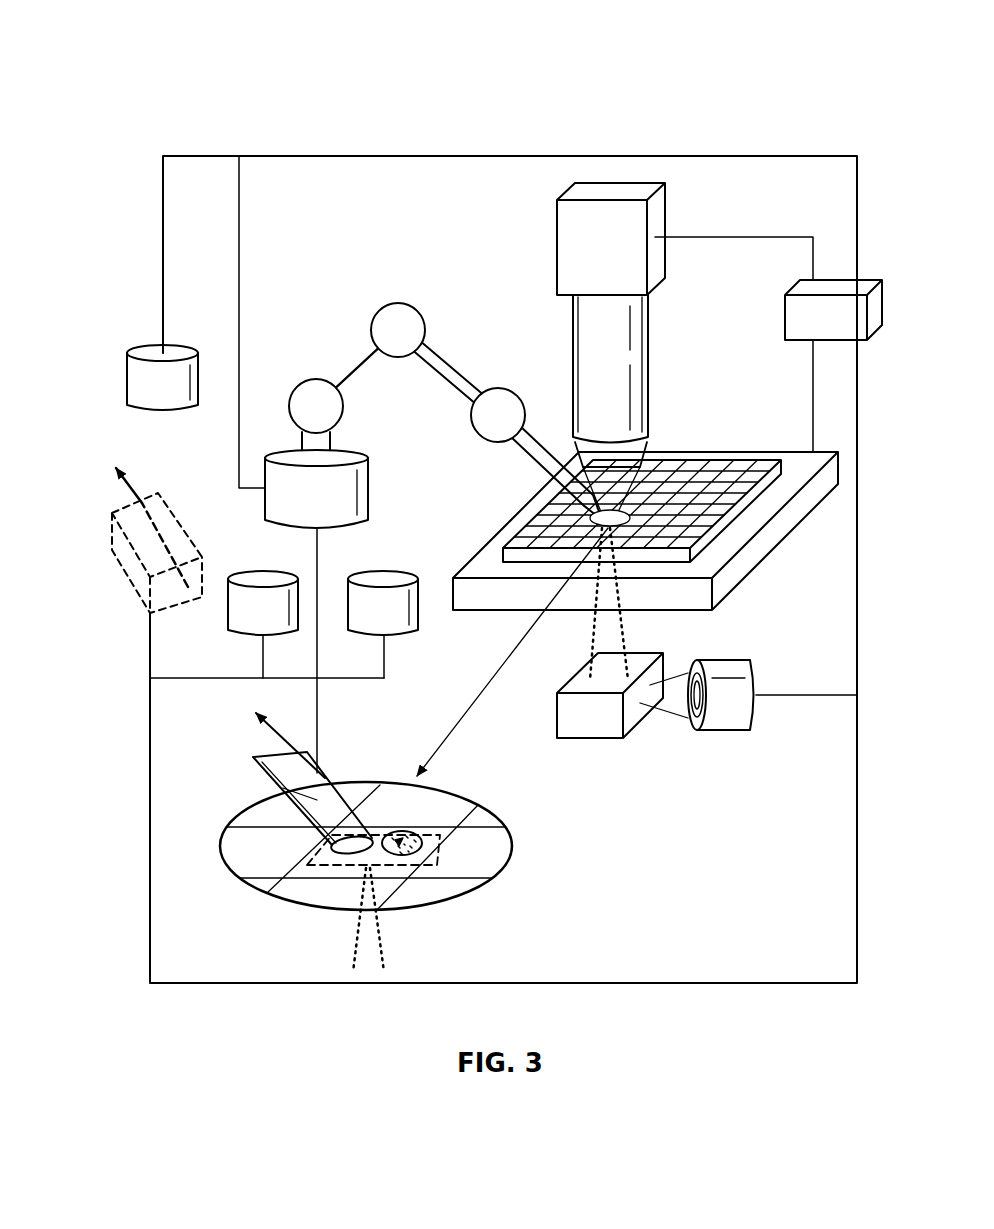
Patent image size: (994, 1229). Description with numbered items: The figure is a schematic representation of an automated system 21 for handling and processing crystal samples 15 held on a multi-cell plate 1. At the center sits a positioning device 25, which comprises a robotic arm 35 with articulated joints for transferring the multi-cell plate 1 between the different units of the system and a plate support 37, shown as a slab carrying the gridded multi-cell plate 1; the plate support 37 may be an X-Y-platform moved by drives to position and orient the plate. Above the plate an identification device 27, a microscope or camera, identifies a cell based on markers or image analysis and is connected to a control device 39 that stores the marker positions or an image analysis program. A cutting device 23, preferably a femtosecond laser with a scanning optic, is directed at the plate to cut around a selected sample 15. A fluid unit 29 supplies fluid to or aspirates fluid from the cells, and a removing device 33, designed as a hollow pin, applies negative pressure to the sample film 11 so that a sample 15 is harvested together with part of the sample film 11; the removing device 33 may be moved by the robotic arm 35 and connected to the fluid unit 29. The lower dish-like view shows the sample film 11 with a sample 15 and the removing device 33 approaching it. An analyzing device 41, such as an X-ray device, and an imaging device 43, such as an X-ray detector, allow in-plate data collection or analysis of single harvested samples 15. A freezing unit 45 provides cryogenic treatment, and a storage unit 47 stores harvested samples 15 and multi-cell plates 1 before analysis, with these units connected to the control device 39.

The multi-cell plate 1 is at (732, 444).
The sample film 11 is at (267, 862).
The sample 15 is at (410, 857).
The automated system 21 is at (757, 150).
The cutting device 23 is at (645, 725).
The positioning device 25 is at (520, 308).
The identification device 27 is at (660, 262).
The fluid unit 29 is at (383, 578).
The removing device 33 is at (327, 773).
The robotic arm 35 is at (357, 480).
The plate support 37 is at (733, 585).
The control device 39 is at (790, 320).
The analyzing device 41 is at (138, 587).
The imaging device 43 is at (118, 558).
The freezing unit 45 is at (263, 575).
The storage unit 47 is at (127, 382).